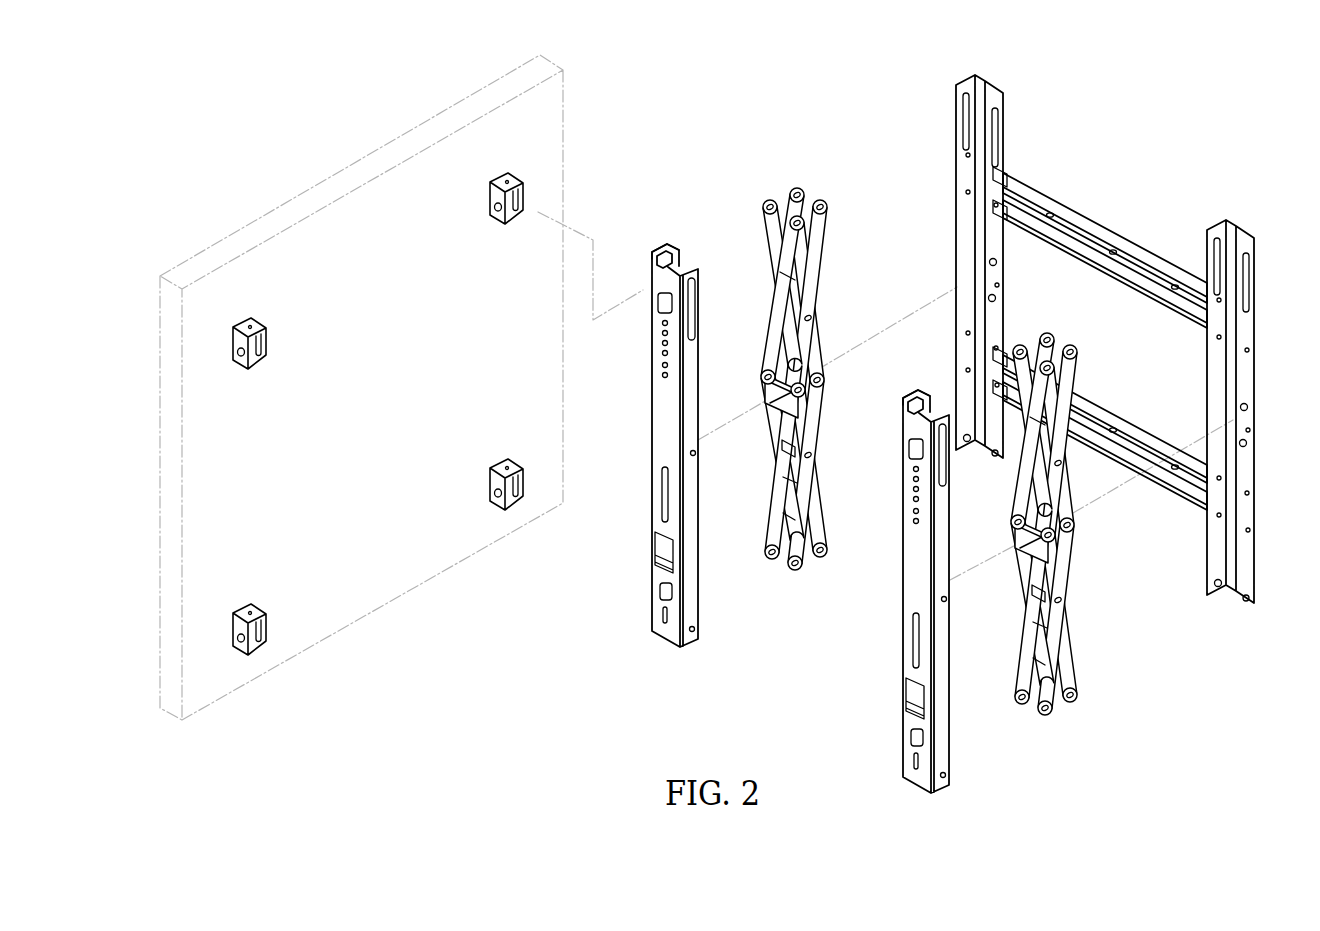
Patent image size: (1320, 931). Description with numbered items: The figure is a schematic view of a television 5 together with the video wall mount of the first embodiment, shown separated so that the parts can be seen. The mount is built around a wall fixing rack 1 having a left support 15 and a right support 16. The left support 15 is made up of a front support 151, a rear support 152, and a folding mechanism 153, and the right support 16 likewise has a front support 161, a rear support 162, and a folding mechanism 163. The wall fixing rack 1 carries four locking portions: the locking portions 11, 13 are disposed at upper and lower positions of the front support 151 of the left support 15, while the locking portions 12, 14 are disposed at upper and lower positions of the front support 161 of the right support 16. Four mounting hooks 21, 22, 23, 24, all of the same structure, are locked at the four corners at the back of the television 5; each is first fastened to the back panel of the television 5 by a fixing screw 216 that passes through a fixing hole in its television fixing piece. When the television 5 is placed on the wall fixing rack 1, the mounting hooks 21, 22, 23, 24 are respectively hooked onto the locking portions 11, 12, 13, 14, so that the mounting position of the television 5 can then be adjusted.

The wall fixing rack 1 is at (1142, 162).
The television 5 is at (373, 227).
The locking portion 11 is at (672, 260).
The locking portion 12 is at (903, 423).
The locking portion 13 is at (655, 571).
The locking portion 14 is at (907, 702).
The left support 15 is at (862, 83).
The front support 151 is at (684, 384).
The rear support 152 is at (985, 97).
The folding mechanism 153 is at (817, 223).
The right support 16 is at (1250, 708).
The front support 161 is at (1003, 591).
The rear support 162 is at (1243, 610).
The folding mechanism 163 is at (1068, 668).
The mounting hook 21 is at (517, 178).
The mounting hook 22 is at (263, 340).
The mounting hook 23 is at (520, 480).
The mounting hook 24 is at (260, 643).
The fixing screw 216 is at (503, 217).